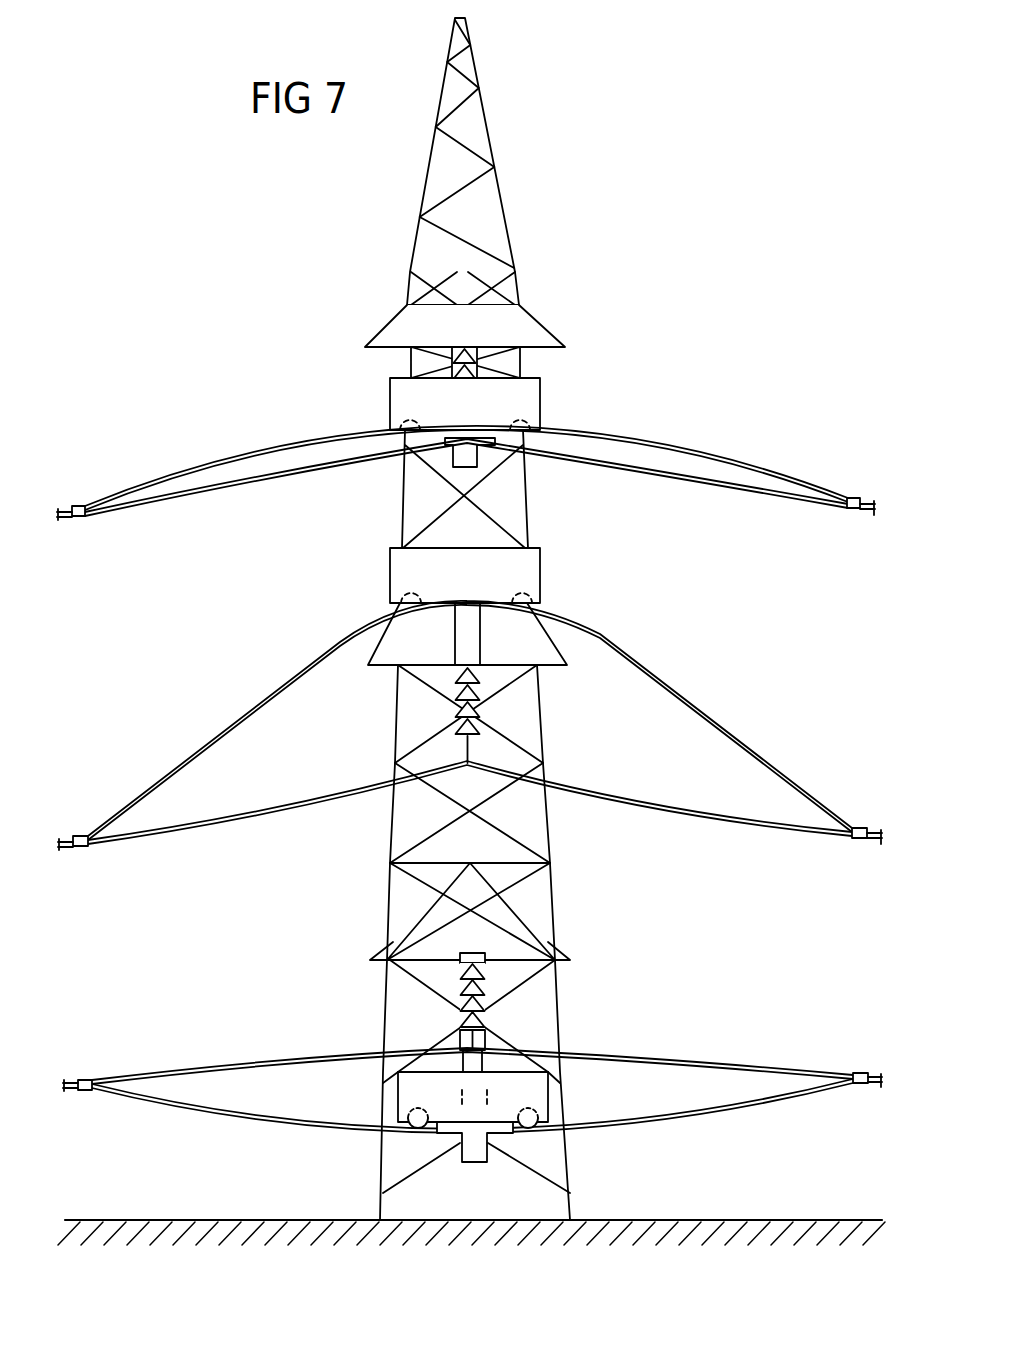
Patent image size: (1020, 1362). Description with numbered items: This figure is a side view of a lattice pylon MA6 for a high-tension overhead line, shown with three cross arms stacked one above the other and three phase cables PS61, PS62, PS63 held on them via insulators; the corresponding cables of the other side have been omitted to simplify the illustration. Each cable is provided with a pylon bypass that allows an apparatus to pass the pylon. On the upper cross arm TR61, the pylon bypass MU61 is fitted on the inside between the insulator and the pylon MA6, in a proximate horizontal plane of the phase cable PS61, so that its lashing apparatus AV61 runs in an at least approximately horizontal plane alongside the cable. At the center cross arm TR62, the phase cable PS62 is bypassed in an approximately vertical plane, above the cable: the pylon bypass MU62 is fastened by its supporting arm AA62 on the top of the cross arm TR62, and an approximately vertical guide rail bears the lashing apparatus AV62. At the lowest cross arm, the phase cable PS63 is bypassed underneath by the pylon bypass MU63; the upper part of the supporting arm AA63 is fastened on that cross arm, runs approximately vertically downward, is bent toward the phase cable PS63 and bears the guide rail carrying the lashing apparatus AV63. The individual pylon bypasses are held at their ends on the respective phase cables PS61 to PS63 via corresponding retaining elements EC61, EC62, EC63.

The lattice pylon MA6 is at (415, 241).
The cross arm TR61 is at (538, 329).
The lashing apparatus AV61 is at (541, 401).
The pylon bypass MU61 is at (235, 436).
The retaining element EC61 is at (80, 506).
The phase cable PS61 is at (207, 486).
The lashing apparatus AV62 is at (541, 576).
The cross arm TR62 is at (556, 665).
The arm AA62 is at (457, 640).
The pylon bypass MU62 is at (722, 704).
The retaining element EC62 is at (86, 836).
The phase cable PS62 is at (250, 814).
The arm AA63 is at (486, 1040).
The lashing apparatus AV63 is at (550, 1097).
The pylon bypass MU63 is at (688, 1133).
The retaining element EC63 is at (86, 1080).
The phase cable PS63 is at (288, 1063).